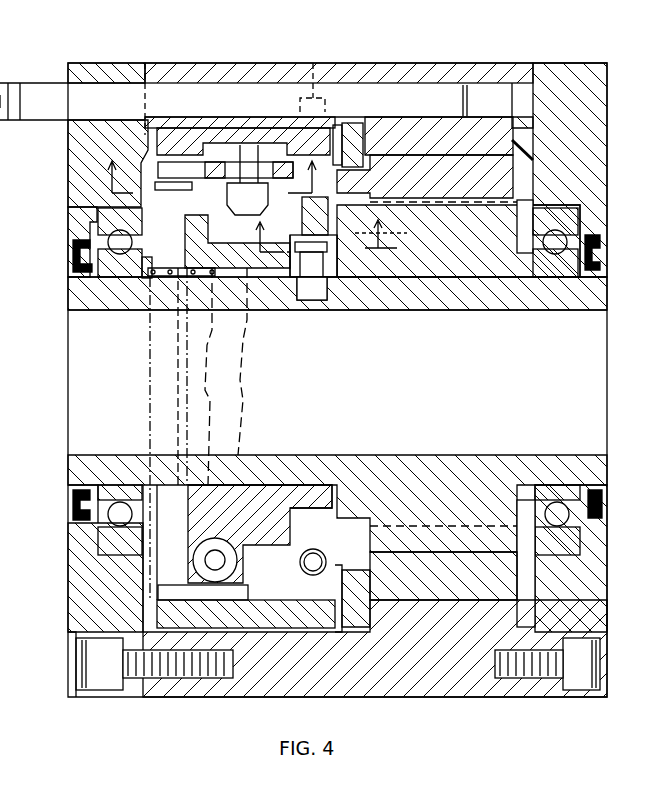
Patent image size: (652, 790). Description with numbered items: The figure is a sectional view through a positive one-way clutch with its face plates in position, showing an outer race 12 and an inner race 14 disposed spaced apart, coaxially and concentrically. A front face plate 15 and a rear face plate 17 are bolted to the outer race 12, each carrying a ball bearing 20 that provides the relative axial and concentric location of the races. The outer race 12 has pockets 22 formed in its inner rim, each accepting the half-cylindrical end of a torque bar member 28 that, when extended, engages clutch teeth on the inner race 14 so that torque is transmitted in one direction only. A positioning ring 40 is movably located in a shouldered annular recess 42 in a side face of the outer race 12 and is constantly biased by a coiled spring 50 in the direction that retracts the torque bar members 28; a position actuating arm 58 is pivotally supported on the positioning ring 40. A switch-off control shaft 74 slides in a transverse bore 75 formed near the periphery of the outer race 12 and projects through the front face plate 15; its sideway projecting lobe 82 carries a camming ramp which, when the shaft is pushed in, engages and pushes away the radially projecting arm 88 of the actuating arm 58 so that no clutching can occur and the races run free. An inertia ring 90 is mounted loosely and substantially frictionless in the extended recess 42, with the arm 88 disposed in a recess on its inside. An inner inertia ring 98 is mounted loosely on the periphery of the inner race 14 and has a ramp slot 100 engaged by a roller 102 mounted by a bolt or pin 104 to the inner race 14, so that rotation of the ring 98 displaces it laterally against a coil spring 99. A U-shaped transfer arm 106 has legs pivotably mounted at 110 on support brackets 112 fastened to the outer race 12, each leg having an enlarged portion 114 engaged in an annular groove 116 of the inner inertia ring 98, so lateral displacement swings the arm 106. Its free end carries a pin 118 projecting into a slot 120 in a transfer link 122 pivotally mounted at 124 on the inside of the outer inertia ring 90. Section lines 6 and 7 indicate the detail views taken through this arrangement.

The outer race 12 is at (512, 80).
The inner race 14 is at (412, 470).
The front face plate 15 is at (88, 76).
The rear face plate 17 is at (580, 75).
The ball bearing 20 is at (118, 252).
The pocket 22 is at (477, 593).
The torque bar member 28 is at (455, 190).
The positioning ring 40 is at (358, 140).
The shouldered annular recess 42 is at (267, 623).
The coiled spring 50 is at (313, 549).
The position actuating arm 58 is at (328, 222).
The section line 6 is at (319, 245).
The section line 7 is at (207, 179).
The switch-off control shaft 74 is at (100, 100).
The transverse bore 75 is at (415, 86).
The sideway projecting lobe 82 is at (140, 95).
The radially projecting arm 88 is at (313, 63).
The inertia ring 90 is at (182, 140).
The inner inertia ring 98 is at (290, 498).
The coil spring 99 is at (157, 467).
The ramp slot 100 is at (300, 285).
The roller 102 is at (327, 258).
The bolt or pin 104 is at (318, 288).
The U-shaped transfer arm 106 is at (212, 226).
The pivot point 110 is at (220, 560).
The support bracket 112 is at (235, 583).
The enlarged portion 114 is at (215, 362).
The annular groove 116 is at (253, 505).
The pin 118 is at (248, 160).
The slot 120 is at (270, 186).
The transfer link 122 is at (219, 172).
The pivotal mounting 124 is at (186, 188).